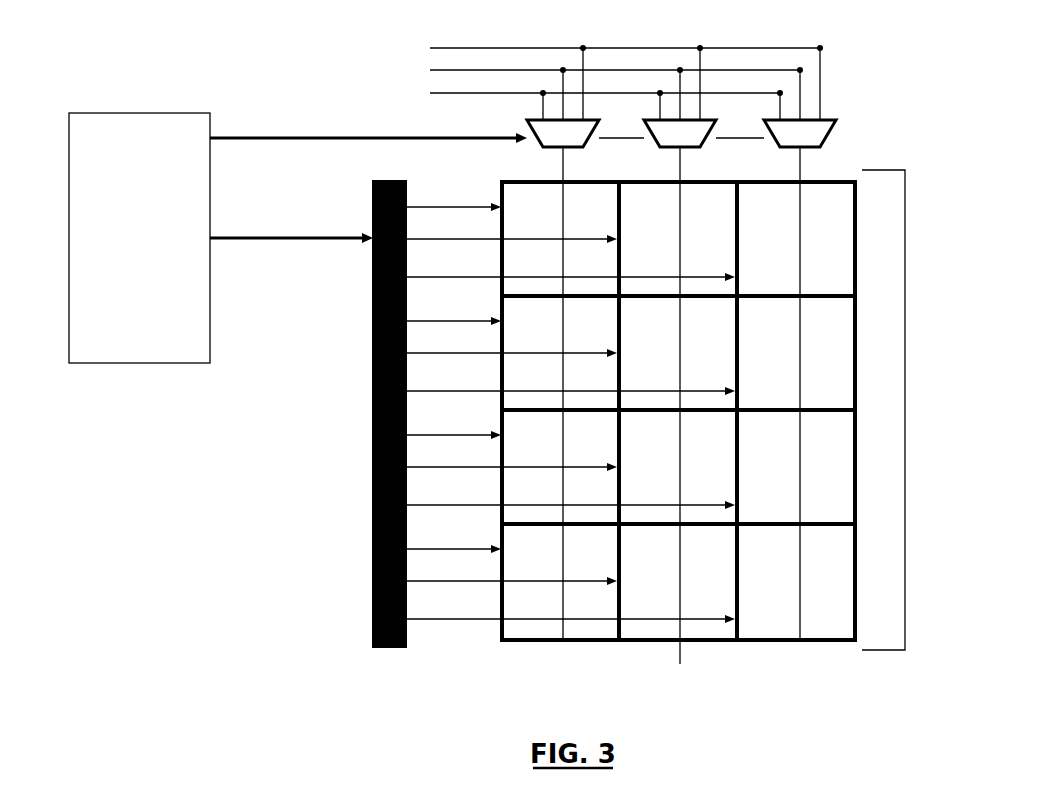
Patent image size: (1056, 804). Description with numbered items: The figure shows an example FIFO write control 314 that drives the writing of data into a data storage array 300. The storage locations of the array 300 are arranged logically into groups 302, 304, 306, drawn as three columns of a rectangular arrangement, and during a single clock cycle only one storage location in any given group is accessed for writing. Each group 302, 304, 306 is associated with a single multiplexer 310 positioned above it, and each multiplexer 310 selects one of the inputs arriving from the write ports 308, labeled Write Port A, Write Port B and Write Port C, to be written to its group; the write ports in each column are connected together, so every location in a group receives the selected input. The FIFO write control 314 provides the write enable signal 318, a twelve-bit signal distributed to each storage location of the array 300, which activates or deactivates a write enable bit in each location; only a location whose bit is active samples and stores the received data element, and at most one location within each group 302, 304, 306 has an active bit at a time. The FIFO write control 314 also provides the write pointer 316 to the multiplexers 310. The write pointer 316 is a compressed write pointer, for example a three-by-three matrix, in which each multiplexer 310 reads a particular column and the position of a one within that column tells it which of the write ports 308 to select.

The data storage array 300 is at (882, 201).
The first group of storage locations 302 is at (542, 418).
The second group of storage locations 304 is at (680, 420).
The third group of storage locations 306 is at (818, 417).
The write ports 308 is at (570, 52).
The multiplexer 310 is at (695, 96).
The FIFO write control 314 is at (124, 225).
The write pointer 316 is at (487, 113).
The write enable signal 318 is at (291, 213).